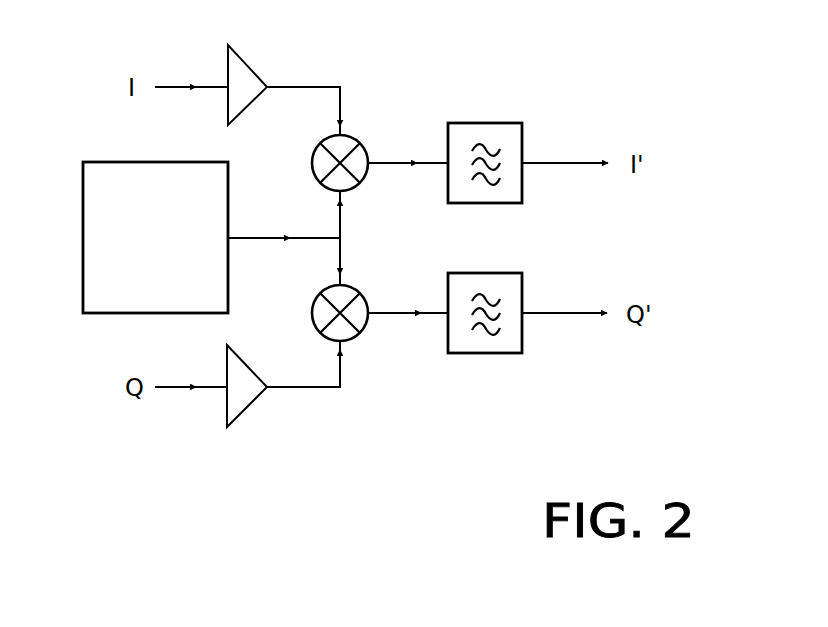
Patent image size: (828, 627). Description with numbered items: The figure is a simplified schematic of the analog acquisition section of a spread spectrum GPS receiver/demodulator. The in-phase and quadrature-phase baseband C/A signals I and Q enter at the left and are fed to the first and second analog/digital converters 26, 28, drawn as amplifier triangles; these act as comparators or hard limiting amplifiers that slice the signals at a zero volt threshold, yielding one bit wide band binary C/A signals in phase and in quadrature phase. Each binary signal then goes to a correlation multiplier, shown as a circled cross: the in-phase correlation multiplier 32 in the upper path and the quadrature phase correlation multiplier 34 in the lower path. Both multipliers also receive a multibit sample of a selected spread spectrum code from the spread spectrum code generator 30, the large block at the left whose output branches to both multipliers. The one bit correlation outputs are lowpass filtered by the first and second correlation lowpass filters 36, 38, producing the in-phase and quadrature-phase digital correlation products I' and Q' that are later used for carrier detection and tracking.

The first analog/digital converter 26 is at (247, 64).
The second analog/digital converter 28 is at (252, 402).
The spread spectrum code generator 30 is at (83, 162).
The in-phase correlation multiplier 32 is at (360, 144).
The quadrature phase correlation multiplier 34 is at (360, 333).
The first correlation lowpass filter 36 is at (522, 143).
The second correlation lowpass filter 38 is at (522, 338).